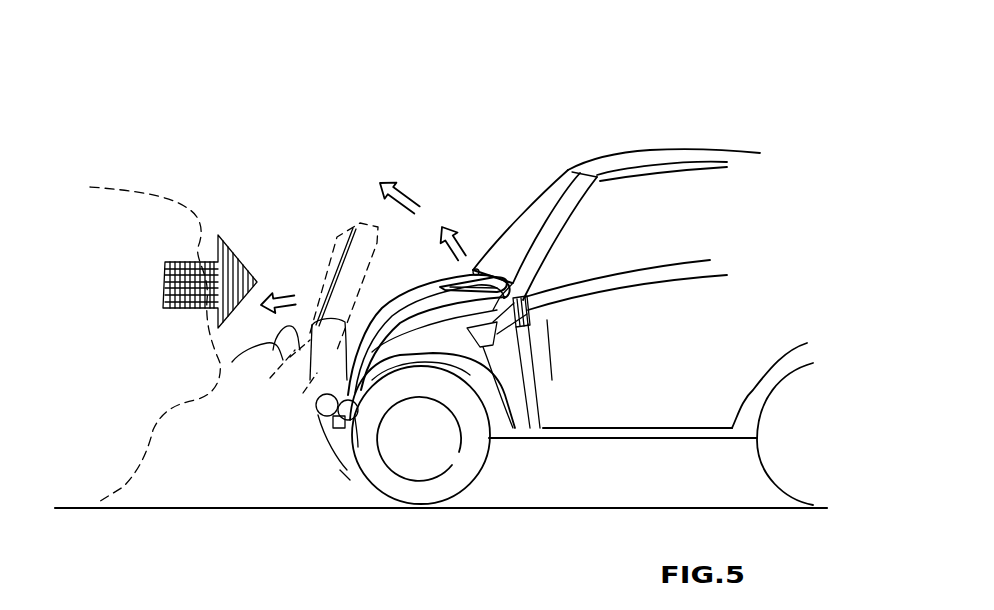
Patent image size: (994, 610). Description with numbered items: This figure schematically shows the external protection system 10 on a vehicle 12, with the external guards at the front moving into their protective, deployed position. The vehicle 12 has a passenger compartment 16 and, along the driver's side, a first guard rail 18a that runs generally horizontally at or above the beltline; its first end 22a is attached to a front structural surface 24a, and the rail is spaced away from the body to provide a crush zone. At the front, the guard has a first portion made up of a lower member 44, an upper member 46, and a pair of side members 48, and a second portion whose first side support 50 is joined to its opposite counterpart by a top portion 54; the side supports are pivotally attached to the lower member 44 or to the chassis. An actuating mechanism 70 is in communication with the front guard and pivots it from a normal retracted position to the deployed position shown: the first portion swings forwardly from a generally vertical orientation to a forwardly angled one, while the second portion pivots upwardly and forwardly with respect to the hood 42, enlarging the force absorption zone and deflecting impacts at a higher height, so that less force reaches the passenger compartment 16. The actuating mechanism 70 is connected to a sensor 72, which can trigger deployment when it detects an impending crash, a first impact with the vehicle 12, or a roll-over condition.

The external protection system 10 is at (648, 378).
The vehicle 12 is at (635, 118).
The passenger compartment 16 is at (647, 193).
The first guard rail 18a is at (632, 275).
The first end 22a is at (533, 343).
The front structural surface 24a is at (428, 350).
The hood 42 is at (408, 288).
The lower member 44 is at (330, 440).
The upper member 46 is at (315, 340).
The side members 48 is at (295, 363).
The first side support 50 is at (423, 292).
The top portion 54 is at (476, 270).
The actuating mechanism 70 is at (310, 420).
The sensor 72 is at (343, 489).